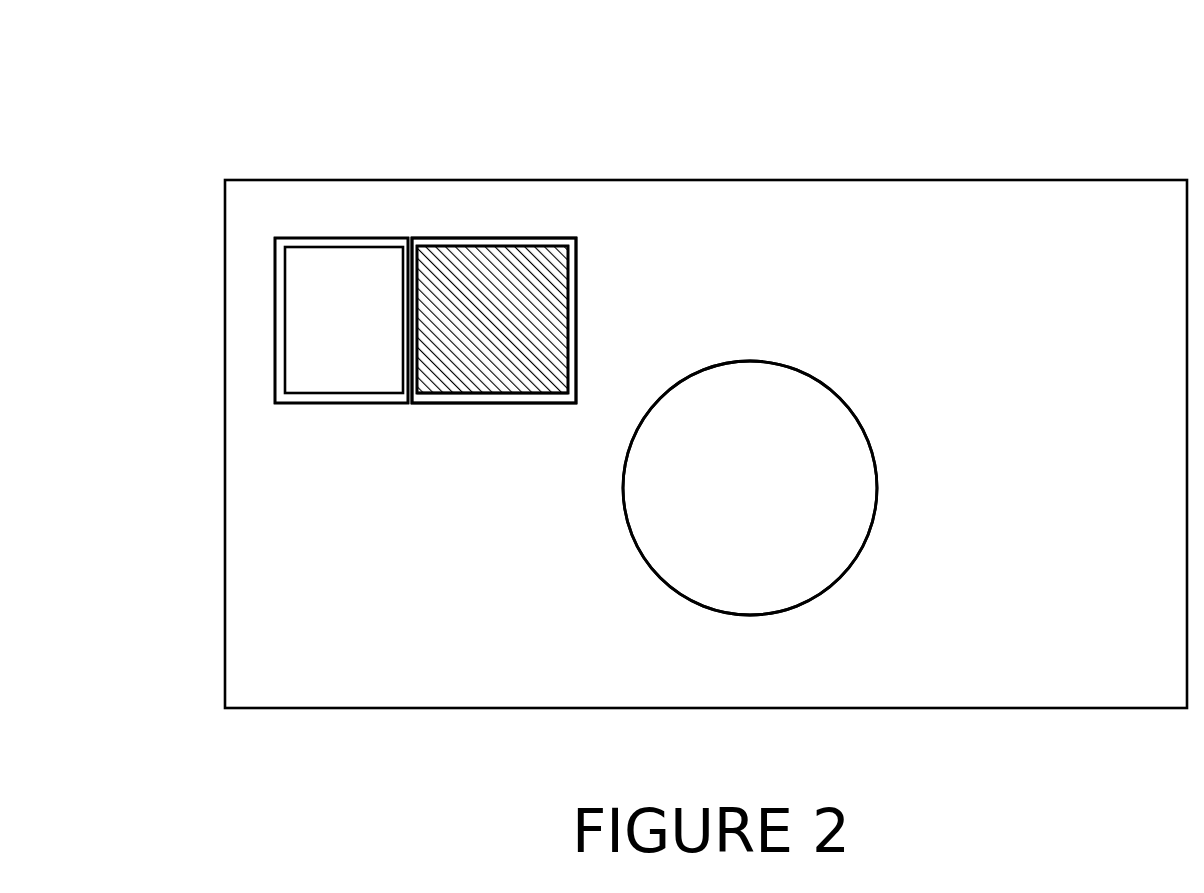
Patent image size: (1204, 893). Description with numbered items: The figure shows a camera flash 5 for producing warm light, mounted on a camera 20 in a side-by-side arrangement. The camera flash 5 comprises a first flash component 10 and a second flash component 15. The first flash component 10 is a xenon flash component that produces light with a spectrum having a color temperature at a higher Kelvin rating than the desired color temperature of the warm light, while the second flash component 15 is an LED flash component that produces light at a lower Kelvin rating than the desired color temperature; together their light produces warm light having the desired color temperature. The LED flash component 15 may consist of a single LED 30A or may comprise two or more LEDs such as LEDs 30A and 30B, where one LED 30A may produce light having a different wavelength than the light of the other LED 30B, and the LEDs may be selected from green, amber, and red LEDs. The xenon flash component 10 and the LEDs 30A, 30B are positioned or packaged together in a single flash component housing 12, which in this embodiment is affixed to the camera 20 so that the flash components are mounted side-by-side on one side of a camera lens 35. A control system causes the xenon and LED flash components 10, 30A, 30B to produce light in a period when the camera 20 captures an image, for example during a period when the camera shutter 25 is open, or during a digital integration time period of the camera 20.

The camera flash 5 is at (485, 222).
The first flash component 10 is at (333, 235).
The single flash component housing 12 is at (575, 287).
The second flash component 15 is at (558, 235).
The camera 20 is at (1037, 180).
The camera shutter 25 is at (732, 418).
The LED 30A is at (455, 297).
The LED 30B is at (465, 403).
The camera lens 35 is at (832, 383).